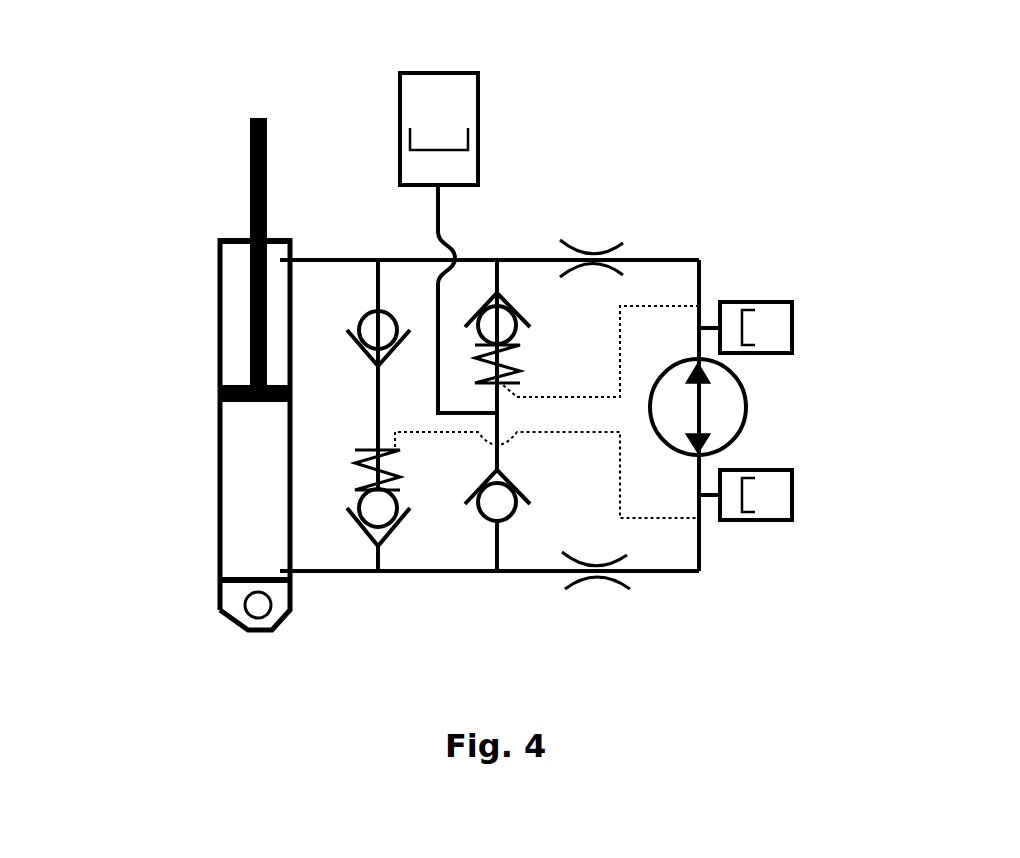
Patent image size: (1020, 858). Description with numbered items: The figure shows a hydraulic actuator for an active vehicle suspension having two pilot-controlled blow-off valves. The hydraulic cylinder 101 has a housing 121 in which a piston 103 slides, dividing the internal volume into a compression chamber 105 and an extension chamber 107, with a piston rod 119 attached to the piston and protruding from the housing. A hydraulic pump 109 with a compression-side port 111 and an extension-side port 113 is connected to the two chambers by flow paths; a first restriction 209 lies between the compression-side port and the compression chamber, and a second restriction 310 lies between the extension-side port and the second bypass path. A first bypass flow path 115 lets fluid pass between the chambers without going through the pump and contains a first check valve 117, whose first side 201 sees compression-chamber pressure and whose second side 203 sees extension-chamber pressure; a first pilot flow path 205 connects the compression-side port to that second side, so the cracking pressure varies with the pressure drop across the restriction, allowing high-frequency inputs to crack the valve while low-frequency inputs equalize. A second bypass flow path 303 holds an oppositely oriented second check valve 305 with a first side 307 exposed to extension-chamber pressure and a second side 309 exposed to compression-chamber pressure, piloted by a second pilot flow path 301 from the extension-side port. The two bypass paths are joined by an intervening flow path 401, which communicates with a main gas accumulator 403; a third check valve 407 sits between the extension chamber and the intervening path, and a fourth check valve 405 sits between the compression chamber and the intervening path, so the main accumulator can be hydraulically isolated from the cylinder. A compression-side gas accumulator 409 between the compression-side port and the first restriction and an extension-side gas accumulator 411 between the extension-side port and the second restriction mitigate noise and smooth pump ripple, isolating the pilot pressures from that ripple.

The hydraulic cylinder 101 is at (207, 273).
The piston 103 is at (222, 393).
The compression chamber 105 is at (245, 518).
The extension chamber 107 is at (232, 327).
The hydraulic pump 109 is at (712, 415).
The compression-side port 111 is at (710, 440).
The extension-side port 113 is at (712, 380).
The first bypass flow path 115 is at (367, 575).
The first check valve 117 is at (410, 512).
The piston rod 119 is at (266, 128).
The housing 121 is at (218, 463).
The first side of the first check valve 201 is at (385, 563).
The second side of the first check valve 203 is at (378, 440).
The first pilot flow path 205 is at (670, 520).
The first restriction 209 is at (585, 490).
The second pilot flow path 301 is at (662, 298).
The second bypass flow path 303 is at (513, 523).
The second check valve 305 is at (528, 327).
The first side of the second check valve 307 is at (500, 293).
The second side of the second check valve 309 is at (500, 383).
The second restriction 310 is at (620, 242).
The intervening flow path 401 is at (418, 413).
The main gas accumulator 403 is at (465, 110).
The fourth check valve 405 is at (498, 543).
The third check valve 407 is at (377, 310).
The compression-side gas accumulator 409 is at (778, 518).
The extension-side gas accumulator 411 is at (792, 325).